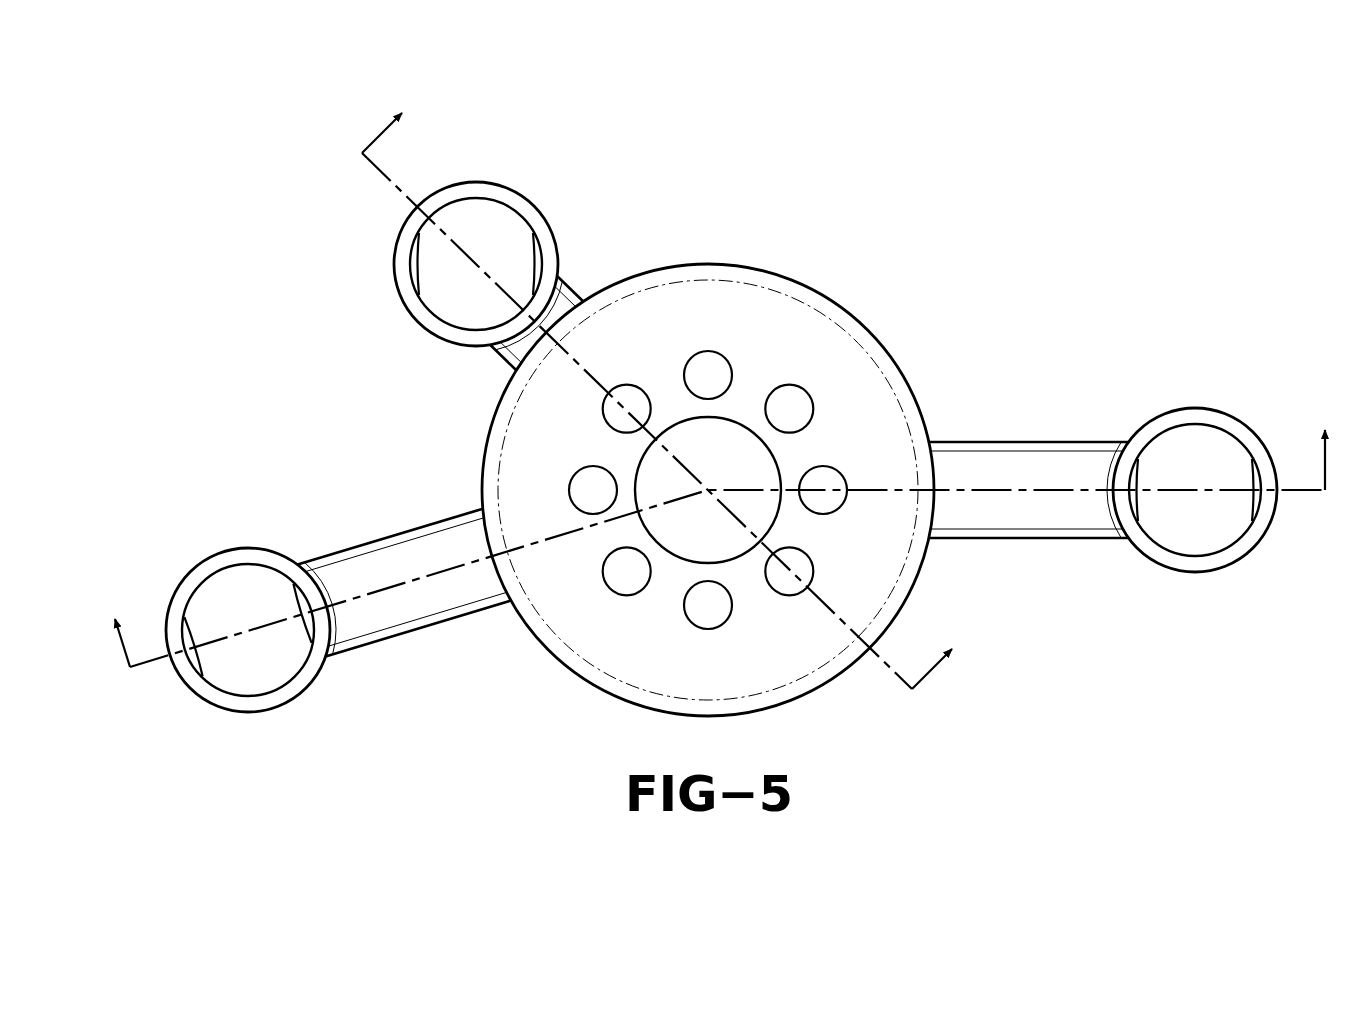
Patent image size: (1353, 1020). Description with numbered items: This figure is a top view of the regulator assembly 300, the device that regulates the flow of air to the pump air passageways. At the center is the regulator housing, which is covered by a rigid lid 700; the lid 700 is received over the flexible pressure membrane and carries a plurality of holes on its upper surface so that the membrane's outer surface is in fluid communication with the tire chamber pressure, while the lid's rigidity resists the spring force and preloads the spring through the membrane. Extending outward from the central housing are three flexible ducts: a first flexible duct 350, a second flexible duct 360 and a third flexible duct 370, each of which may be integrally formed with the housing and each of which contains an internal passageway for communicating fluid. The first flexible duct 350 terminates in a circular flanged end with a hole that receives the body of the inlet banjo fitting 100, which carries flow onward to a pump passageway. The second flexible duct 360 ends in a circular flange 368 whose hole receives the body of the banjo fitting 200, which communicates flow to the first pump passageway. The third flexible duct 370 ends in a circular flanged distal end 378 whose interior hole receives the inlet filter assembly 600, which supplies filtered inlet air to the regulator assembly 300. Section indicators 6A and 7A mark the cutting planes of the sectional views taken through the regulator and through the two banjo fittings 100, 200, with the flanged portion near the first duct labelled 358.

The inlet banjo fitting 100 is at (182, 538).
The banjo fitting 200 is at (1147, 380).
The inlet filter assembly 600 is at (532, 172).
The regulator assembly 300 is at (812, 248).
The rigid lid 700 is at (878, 332).
The first flexible duct 350 is at (418, 602).
The first ring 358 is at (255, 556).
The second flexible duct 360 is at (1000, 462).
The circular flange 368 is at (1207, 416).
The third flexible duct 370 is at (520, 354).
The circular flanged distal end 378 is at (542, 226).
The section line 6A is at (675, 385).
The section line 7A is at (715, 533).